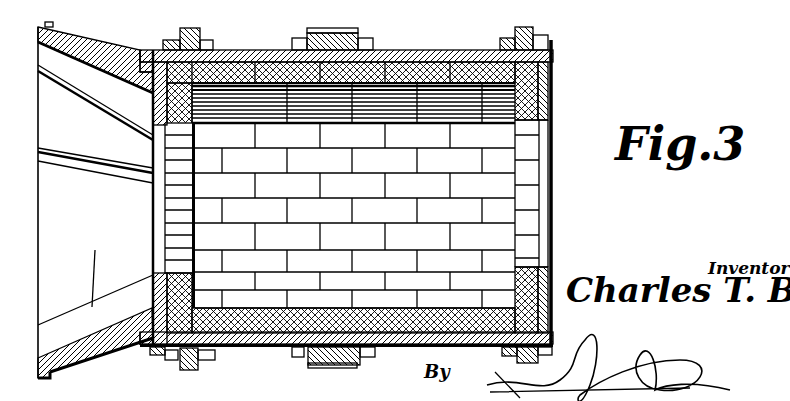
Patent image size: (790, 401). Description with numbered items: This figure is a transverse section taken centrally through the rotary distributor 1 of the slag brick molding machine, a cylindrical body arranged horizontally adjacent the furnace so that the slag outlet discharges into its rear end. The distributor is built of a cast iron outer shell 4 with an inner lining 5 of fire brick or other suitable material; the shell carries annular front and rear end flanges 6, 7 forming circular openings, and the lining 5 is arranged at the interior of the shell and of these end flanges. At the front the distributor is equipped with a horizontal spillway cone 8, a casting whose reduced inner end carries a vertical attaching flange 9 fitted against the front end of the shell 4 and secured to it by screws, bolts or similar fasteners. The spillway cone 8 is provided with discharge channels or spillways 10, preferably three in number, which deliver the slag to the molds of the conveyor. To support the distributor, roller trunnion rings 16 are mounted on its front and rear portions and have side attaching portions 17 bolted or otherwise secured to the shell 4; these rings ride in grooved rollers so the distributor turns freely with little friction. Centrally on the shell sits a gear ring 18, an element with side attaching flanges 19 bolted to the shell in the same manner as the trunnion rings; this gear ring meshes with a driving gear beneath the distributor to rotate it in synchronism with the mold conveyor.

The rotary distributor 1 is at (498, 135).
The outer shell 4 is at (467, 58).
The inner lining 5 is at (420, 78).
The front end flange 6 is at (153, 104).
The rear end flange 7 is at (153, 280).
The spillway cone 8 is at (95, 200).
The attaching flange 9 is at (150, 350).
The discharge channels 10 is at (118, 153).
The roller trunnion rings 16 is at (192, 22).
The side attaching portions 17 is at (213, 43).
The gear ring 18 is at (337, 30).
The side attaching flanges 19 is at (373, 45).